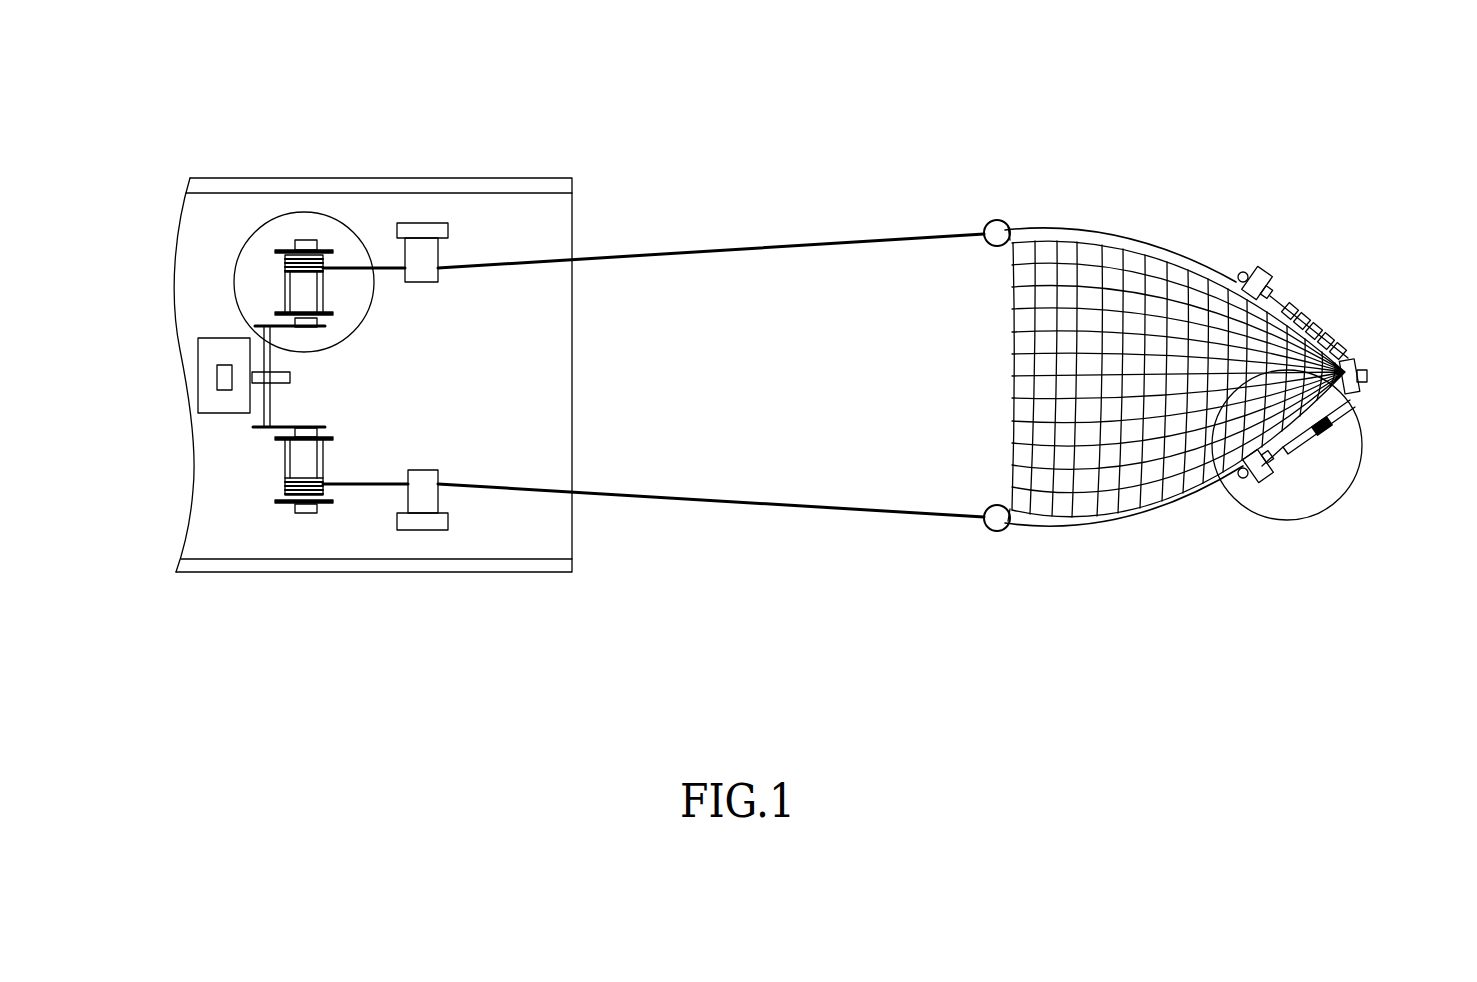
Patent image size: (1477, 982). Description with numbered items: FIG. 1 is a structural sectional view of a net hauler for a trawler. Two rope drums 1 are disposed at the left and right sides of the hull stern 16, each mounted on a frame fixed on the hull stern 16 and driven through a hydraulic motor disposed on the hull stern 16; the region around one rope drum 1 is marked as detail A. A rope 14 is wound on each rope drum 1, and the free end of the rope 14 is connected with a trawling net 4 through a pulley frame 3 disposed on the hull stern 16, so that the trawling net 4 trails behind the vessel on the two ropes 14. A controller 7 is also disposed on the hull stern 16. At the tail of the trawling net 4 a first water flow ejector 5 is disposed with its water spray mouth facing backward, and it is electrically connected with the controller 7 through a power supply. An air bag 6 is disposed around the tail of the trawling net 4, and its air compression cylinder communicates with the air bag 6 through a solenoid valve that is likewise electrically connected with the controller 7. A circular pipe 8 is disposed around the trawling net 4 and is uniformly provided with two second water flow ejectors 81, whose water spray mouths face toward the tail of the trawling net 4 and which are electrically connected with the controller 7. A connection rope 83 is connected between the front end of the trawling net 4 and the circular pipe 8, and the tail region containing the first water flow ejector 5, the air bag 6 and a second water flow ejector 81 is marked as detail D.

The rope drum 1 is at (228, 453).
The hull stern 16 is at (495, 228).
The detail region A is at (278, 217).
The controller 7 is at (223, 373).
The pulley frame 3 is at (423, 502).
The rope 14 is at (697, 503).
The trawling net 4 is at (1080, 300).
The connection rope 83 is at (1187, 262).
The circular pipe 8 is at (1250, 270).
The second water flow ejector 81 is at (1270, 273).
The air bag 6 is at (1357, 357).
The first water flow ejector 5 is at (1358, 393).
The detail region D is at (1252, 513).